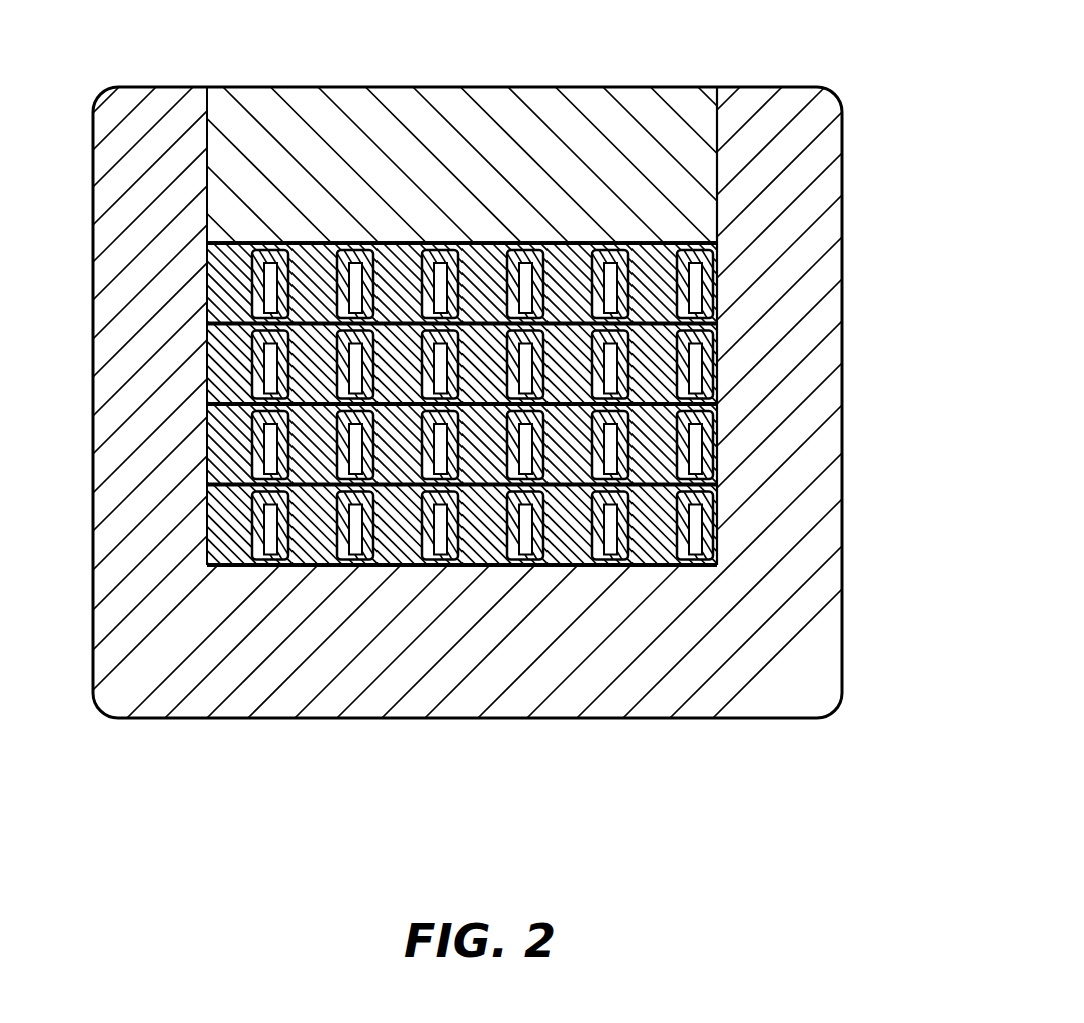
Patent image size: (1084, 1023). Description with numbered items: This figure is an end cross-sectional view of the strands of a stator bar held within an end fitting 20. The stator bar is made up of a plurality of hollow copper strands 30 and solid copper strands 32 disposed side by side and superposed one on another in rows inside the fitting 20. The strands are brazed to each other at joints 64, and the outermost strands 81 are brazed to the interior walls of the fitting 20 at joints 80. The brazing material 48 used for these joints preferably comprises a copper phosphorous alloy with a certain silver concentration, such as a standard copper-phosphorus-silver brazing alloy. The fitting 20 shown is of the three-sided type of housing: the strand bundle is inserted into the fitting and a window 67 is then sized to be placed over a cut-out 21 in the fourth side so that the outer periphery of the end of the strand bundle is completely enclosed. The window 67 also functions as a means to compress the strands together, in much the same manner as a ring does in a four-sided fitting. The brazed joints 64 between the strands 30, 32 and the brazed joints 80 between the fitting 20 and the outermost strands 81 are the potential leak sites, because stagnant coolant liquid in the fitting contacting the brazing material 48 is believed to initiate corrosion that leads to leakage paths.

The end fitting 20 is at (815, 207).
The window 67 is at (630, 103).
The cut-out 21 is at (716, 160).
The hollow copper strands 30 is at (718, 379).
The solid copper strands 32 is at (720, 460).
The outermost strands 81 is at (519, 626).
The brazed joints between strands 64 is at (388, 566).
The brazed joints between fitting and strands 80 is at (535, 568).
The brazing material 48 is at (617, 570).